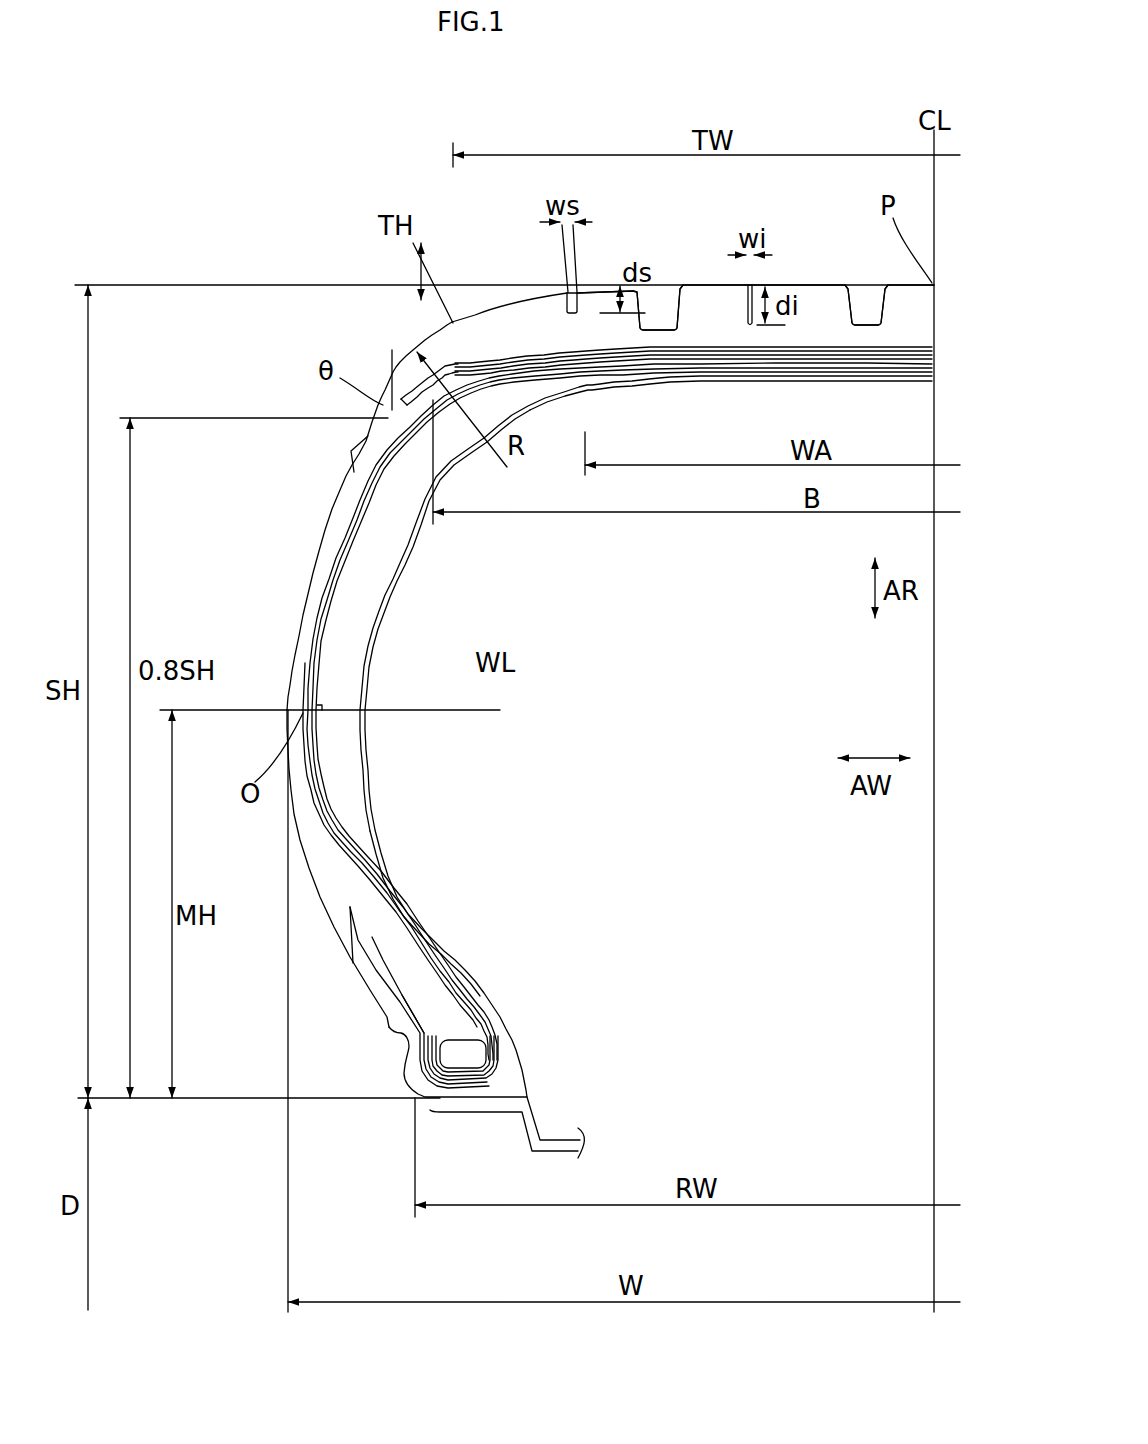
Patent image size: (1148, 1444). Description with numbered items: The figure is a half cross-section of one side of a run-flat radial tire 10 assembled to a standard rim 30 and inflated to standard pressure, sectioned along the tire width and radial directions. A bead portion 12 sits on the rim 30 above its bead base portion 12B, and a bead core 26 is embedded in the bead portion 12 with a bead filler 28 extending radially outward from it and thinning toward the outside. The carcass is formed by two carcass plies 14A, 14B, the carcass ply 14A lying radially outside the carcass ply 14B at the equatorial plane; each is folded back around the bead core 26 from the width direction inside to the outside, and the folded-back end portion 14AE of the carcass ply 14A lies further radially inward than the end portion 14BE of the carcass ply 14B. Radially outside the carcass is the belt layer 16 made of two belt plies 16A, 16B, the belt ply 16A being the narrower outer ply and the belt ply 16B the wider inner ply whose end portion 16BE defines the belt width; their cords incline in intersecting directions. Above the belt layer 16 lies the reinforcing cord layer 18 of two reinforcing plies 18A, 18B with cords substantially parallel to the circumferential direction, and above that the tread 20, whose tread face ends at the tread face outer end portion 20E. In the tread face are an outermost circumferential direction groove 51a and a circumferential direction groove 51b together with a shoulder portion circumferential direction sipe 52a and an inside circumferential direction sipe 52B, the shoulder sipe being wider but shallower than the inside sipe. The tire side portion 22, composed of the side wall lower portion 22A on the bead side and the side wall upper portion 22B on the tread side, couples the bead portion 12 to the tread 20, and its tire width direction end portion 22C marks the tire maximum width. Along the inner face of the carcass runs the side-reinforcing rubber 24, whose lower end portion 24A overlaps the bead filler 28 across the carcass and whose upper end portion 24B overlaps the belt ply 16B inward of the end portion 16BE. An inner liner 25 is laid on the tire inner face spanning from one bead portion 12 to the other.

The run-flat radial tire 10 is at (428, 150).
The bead portion 12 is at (513, 1030).
The bead base portion 12B is at (237, 1100).
The carcass ply 14A is at (338, 548).
The end portion of carcass ply 14A 14AE is at (372, 940).
The carcass ply 14B is at (360, 520).
The end portion of carcass ply 14B 14BE is at (307, 660).
The belt layer 16 is at (510, 377).
The belt ply 16A is at (727, 360).
The belt ply 16B is at (670, 370).
The end portion of belt ply 16B 16BE is at (420, 387).
The reinforcing cord layer 18 is at (737, 345).
The reinforcing ply 18A is at (595, 347).
The reinforcing ply 18B is at (563, 350).
The tread 20 is at (807, 283).
The tread face outer end portion 20E is at (455, 318).
The tire side portion 22 is at (290, 812).
The side wall lower portion 22A is at (290, 843).
The side wall upper portion 22B is at (352, 445).
The tire width direction end portion of tire side portion 22C is at (287, 710).
The side-reinforcing rubber 24 is at (382, 603).
The lower end portion of side-reinforcing rubber 24A is at (400, 900).
The upper end portion of side-reinforcing rubber 24B is at (583, 385).
The inner liner 25 is at (377, 647).
The bead core 26 is at (457, 1032).
The bead filler 28 is at (427, 977).
The rim 30 is at (430, 1110).
The outermost circumferential direction groove 51a is at (672, 300).
The circumferential direction groove 51b is at (877, 302).
The shoulder portion circumferential direction sipe 52a is at (578, 292).
The inside circumferential direction sipe 52B is at (750, 284).